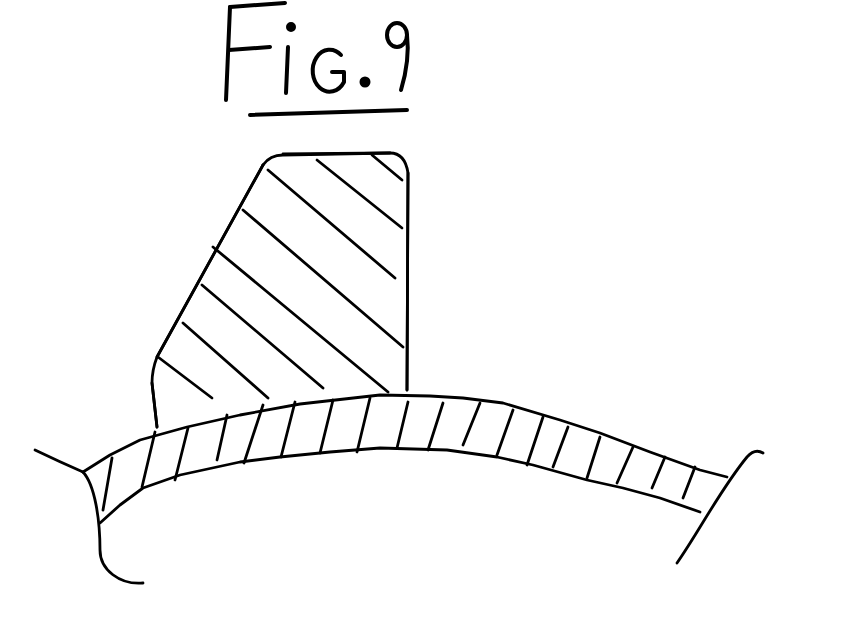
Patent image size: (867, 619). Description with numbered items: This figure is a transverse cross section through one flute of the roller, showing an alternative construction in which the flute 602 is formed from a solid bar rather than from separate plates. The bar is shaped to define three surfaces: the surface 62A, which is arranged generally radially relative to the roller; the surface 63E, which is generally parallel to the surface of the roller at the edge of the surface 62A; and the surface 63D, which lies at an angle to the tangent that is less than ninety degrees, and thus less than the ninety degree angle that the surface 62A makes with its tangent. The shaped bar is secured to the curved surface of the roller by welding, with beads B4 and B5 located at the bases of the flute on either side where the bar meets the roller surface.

The flute 602 is at (347, 278).
The surface 63E is at (333, 150).
The surface 63D is at (213, 243).
The surface 62A is at (410, 295).
The bead B4 is at (415, 397).
The bead B5 is at (137, 440).